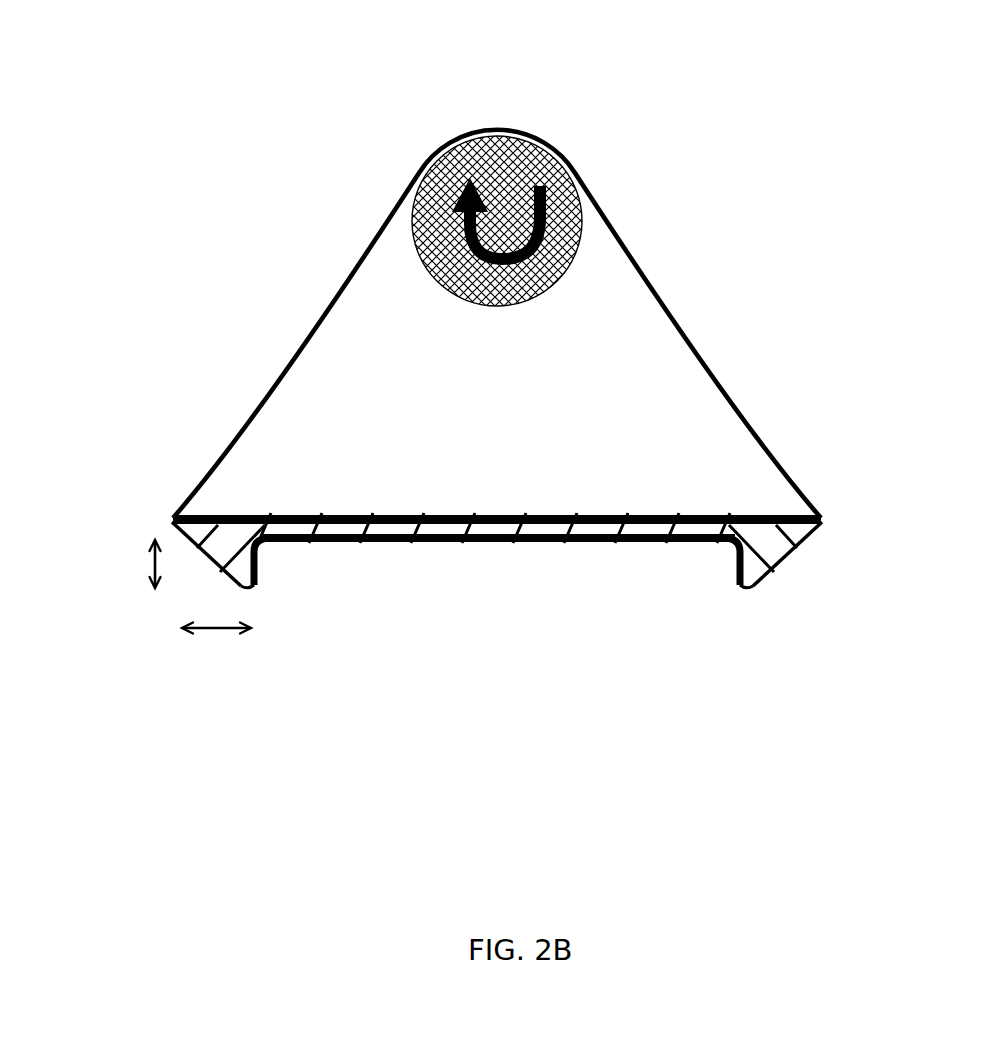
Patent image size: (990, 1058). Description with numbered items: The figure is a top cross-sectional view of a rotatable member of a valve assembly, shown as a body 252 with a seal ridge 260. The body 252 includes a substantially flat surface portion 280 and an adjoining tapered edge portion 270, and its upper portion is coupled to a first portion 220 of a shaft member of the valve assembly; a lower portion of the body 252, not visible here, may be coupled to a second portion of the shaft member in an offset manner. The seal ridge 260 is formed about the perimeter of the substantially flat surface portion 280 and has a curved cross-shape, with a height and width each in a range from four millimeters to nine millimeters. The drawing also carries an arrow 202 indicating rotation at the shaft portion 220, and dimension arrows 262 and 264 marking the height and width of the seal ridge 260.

The rotational flow arrow 202 is at (460, 195).
The first portion of the shaft member 220 is at (584, 228).
The body 252 is at (748, 373).
The seal ridge 260 is at (756, 590).
The vertical dimension 262 is at (138, 563).
The horizontal dimension 264 is at (218, 645).
The tapered edge portion 270 is at (824, 531).
The substantially flat surface portion 280 is at (493, 552).